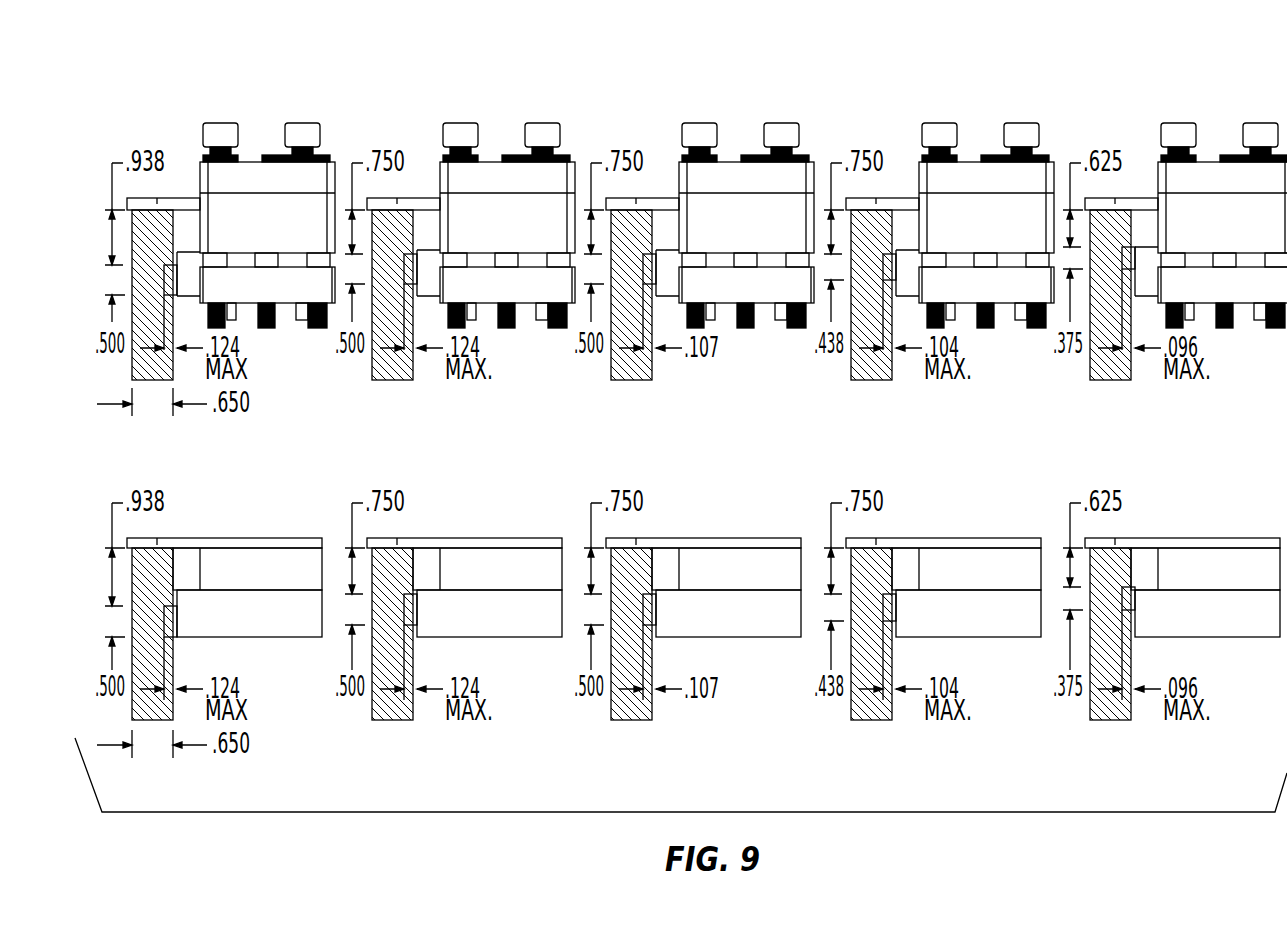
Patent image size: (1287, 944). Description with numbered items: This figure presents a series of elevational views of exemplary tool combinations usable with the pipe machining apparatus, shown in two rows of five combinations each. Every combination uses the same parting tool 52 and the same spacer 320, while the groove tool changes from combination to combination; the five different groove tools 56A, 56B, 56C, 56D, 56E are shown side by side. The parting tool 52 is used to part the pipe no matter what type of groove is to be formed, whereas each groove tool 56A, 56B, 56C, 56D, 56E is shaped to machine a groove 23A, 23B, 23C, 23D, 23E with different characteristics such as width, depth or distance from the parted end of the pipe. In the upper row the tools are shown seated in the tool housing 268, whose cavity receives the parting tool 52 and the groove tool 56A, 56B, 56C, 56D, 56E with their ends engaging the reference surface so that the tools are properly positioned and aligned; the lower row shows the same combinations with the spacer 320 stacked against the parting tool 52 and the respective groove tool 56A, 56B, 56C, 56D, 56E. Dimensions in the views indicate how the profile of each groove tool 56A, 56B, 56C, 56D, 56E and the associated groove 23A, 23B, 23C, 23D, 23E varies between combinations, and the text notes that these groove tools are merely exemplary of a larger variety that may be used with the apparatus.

The parting tool 52 is at (150, 198).
The tool housing 268 is at (253, 161).
The groove 23A is at (177, 277).
The groove 23B is at (468, 449).
The groove 23C is at (707, 449).
The groove 23D is at (947, 449).
The groove 23E is at (1182, 449).
The groove tool 56A is at (188, 279).
The groove tool 56B is at (496, 443).
The groove tool 56C is at (735, 443).
The groove tool 56D is at (975, 443).
The groove tool 56E is at (1211, 442).
The spacer 320 is at (283, 585).